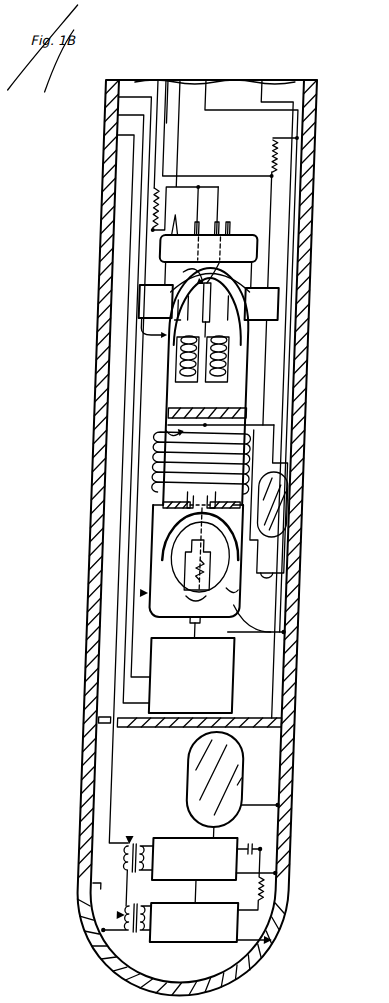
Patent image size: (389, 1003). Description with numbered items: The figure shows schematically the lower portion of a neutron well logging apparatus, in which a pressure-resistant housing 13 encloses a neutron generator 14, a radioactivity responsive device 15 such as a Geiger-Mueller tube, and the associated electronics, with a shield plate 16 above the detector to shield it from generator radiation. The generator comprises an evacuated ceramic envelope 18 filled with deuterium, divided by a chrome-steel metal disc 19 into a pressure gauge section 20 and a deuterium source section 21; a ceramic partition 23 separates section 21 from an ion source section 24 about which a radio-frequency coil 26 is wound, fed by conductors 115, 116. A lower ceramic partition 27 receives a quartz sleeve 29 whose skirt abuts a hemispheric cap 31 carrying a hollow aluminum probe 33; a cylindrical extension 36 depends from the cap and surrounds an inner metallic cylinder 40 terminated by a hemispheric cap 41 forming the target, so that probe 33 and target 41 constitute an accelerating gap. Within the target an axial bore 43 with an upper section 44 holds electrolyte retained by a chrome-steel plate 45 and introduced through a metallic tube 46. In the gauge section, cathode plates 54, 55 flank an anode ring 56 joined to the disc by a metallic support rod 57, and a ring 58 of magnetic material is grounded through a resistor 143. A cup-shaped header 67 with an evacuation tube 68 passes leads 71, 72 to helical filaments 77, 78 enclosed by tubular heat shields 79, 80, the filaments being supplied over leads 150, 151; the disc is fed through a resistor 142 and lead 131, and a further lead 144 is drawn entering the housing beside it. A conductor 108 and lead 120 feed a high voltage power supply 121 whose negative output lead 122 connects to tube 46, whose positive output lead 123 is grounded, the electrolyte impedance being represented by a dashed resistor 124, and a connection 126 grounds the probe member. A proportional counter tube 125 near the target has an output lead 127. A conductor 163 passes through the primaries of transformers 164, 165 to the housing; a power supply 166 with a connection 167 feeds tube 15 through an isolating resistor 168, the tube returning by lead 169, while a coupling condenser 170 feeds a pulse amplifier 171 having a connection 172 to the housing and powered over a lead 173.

The pressure-resistant housing 13 is at (317, 172).
The neutron generator 14 is at (160, 593).
The radioactivity responsive device 15 is at (267, 765).
The shield plate 16 is at (178, 729).
The evacuated envelope 18 is at (258, 402).
The metal disc 19 is at (168, 335).
The pressure gauge section 20 is at (209, 248).
The deuterium source section 21 is at (221, 404).
The ceramic partition 23 is at (178, 400).
The ion source section 24 is at (178, 425).
The radio-frequency coil 26 is at (167, 455).
The ceramic partition 27 is at (178, 505).
The quartz sleeve 29 is at (178, 499).
The hemispheric cap 31 is at (245, 520).
The hollow aluminum probe 33 is at (201, 493).
The cylindrical extension 36 is at (202, 578).
The inner metallic cylinder 40 is at (268, 558).
The hemispheric cap 41 is at (185, 540).
The axial bore 43 is at (258, 608).
The upper section of reduced diameter 44 is at (188, 558).
The chrome-steel plate 45 is at (255, 634).
The metallic tube 46 is at (190, 603).
The cathode plate 54 is at (147, 292).
The cathode plate 55 is at (258, 272).
The anode ring 56 is at (221, 260).
The metallic support rod 57 is at (257, 335).
The ring of magnetic material 58 is at (286, 302).
The cup-shaped header 67 is at (238, 228).
The evacuation tube 68 is at (182, 216).
The lead 71 is at (205, 222).
The lead 72 is at (226, 225).
The helical filament 77 is at (186, 356).
The helical filament 78 is at (238, 378).
The tubular heat shield 79 is at (186, 376).
The tubular heat shield 80 is at (240, 362).
The conductor 108 is at (119, 97).
The conductor 115 is at (206, 80).
The conductor 116 is at (262, 80).
The lead 120 is at (119, 116).
The high voltage power supply 121 is at (254, 684).
The output lead 122 is at (207, 622).
The output lead 123 is at (305, 633).
The resistor 124 is at (256, 590).
The proportional counter tube 125 is at (302, 480).
The connection 126 is at (291, 578).
The lead 127 is at (305, 78).
The lead 131 is at (167, 78).
The resistor 142 is at (155, 208).
The resistor 143 is at (272, 158).
The conductor 144 is at (162, 78).
The lead 150 is at (168, 123).
The lead 151 is at (181, 149).
The conductor 163 is at (119, 135).
The transformer 164 is at (148, 915).
The transformer 165 is at (156, 838).
The power supply 166 is at (190, 942).
The connection 167 is at (296, 952).
The isolating resistor 168 is at (302, 938).
The lead 169 is at (296, 805).
The coupling condenser 170 is at (306, 872).
The pulse amplifier 171 is at (205, 838).
The connection 172 is at (293, 891).
The lead 173 is at (226, 892).